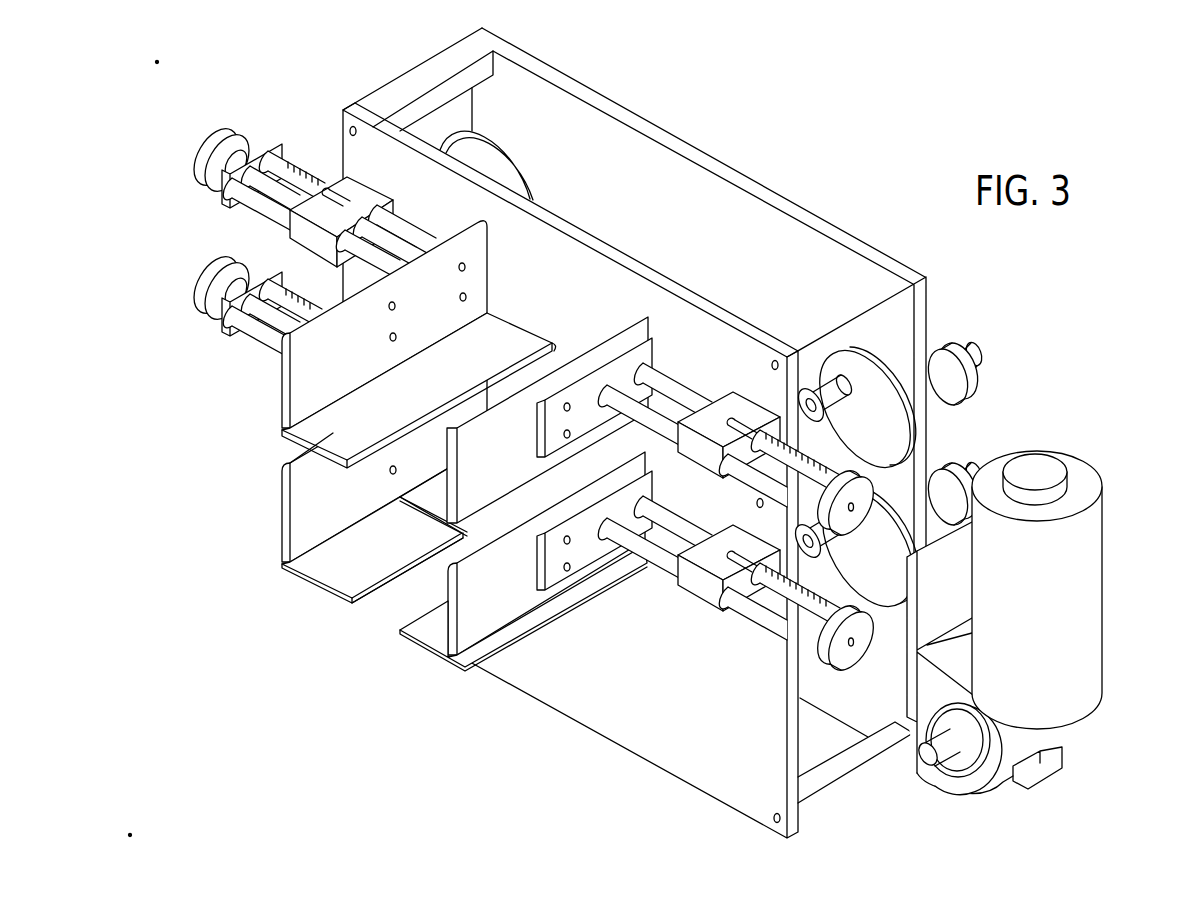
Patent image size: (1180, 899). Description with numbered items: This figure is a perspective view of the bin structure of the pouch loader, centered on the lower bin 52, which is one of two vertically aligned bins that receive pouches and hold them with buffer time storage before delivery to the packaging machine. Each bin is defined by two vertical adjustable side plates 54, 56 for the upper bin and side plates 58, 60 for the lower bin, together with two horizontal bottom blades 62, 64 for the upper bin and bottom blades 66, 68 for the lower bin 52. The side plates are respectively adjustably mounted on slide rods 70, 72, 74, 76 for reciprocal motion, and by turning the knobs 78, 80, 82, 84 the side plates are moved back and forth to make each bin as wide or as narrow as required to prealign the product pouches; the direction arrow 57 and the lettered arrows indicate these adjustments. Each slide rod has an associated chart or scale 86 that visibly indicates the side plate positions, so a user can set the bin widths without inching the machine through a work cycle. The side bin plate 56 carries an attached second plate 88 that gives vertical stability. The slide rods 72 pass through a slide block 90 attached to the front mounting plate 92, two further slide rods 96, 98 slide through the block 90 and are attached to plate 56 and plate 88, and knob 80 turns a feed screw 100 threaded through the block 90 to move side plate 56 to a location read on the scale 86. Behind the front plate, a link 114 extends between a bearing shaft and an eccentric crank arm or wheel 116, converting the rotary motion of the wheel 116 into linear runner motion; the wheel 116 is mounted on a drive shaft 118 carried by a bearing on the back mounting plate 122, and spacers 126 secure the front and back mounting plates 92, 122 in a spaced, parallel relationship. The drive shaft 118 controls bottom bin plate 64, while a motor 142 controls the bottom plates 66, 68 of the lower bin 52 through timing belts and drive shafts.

The lower bin 52 is at (348, 580).
The vertical adjustable side plate 54 is at (315, 366).
The vertical adjustable side plate 56 is at (488, 451).
The direction arrow 57 is at (565, 312).
The vertical adjustable side plate 58 is at (305, 524).
The vertical adjustable side plate 60 is at (473, 589).
The horizontal bottom blade 62 is at (352, 424).
The horizontal bottom blade 64 is at (428, 495).
The horizontal bottom blade 66 is at (352, 564).
The horizontal bottom blade 68 is at (444, 630).
The slide rod 70 is at (410, 232).
The slide rod 72 is at (677, 380).
The slide rod 74 is at (253, 343).
The slide rod 76 is at (653, 566).
The knob 78 is at (218, 140).
The knob 80 is at (855, 515).
The knob 82 is at (211, 292).
The knob 84 is at (848, 658).
The chart or scale 86 is at (300, 165).
The second plate 88 is at (663, 355).
The slide block 90 is at (742, 406).
The front mounting plate 92 is at (368, 140).
The slide rod 96 is at (694, 398).
The slide rod 98 is at (663, 430).
The feed screw 100 is at (770, 470).
The link 114 is at (841, 400).
The eccentric crank arm or wheel 116 is at (905, 433).
The drive shaft 118 is at (982, 358).
The back mounting plate 122 is at (752, 200).
The spacer 126 is at (426, 70).
The motor 142 is at (1090, 567).